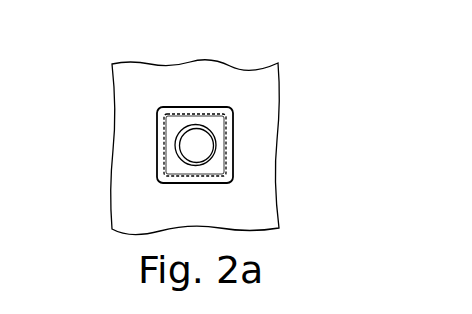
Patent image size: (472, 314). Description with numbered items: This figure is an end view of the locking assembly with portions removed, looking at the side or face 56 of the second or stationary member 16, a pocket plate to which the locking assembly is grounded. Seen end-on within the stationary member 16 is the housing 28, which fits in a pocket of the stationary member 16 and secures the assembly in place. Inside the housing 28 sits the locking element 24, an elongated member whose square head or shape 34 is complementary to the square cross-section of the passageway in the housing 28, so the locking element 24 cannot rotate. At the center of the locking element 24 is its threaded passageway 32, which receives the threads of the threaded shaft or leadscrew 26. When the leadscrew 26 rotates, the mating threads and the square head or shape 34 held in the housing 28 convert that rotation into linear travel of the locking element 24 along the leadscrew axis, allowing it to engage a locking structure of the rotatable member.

The second or stationary member 16 is at (112, 229).
The locking element 24 is at (213, 125).
The threaded shaft or leadscrew 26 is at (187, 150).
The housing 28 is at (229, 149).
The threaded passageway 32 is at (184, 142).
The square head or shape 34 is at (192, 114).
The side or face 56 is at (248, 212).